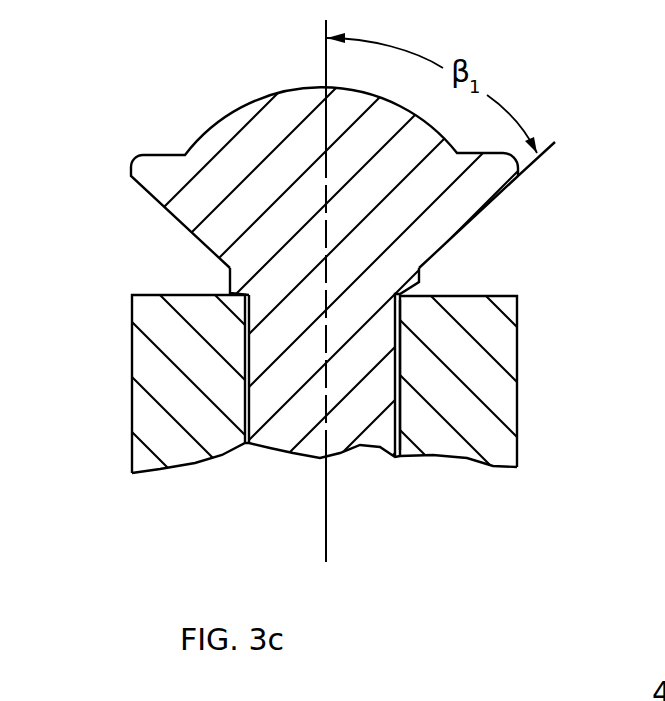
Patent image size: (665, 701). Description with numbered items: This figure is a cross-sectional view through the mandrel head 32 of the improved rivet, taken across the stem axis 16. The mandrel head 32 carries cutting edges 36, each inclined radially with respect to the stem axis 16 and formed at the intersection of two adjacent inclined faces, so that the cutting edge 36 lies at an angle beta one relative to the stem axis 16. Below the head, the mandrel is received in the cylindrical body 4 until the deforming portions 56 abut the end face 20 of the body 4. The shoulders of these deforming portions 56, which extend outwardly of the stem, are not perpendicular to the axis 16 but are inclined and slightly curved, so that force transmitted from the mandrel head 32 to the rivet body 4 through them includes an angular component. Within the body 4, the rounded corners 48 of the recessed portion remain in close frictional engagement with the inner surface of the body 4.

The mandrel head 32 is at (263, 127).
The cutting edge 36 is at (482, 237).
The radial projection 56 is at (235, 293).
The end face 20 is at (150, 293).
The cylindrical body 4 is at (460, 444).
The rounded corner 48 is at (398, 344).
The stem axis 16 is at (326, 527).